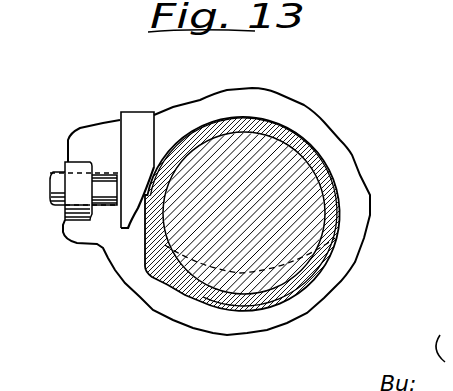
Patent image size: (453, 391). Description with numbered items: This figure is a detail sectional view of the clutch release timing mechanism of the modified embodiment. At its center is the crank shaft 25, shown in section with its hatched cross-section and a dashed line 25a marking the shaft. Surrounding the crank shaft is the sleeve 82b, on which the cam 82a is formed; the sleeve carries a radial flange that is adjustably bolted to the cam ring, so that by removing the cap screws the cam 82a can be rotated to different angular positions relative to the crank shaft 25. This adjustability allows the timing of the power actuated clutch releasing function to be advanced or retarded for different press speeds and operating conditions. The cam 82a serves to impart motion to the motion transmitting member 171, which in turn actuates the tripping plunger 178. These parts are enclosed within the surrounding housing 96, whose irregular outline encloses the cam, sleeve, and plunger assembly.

The housing 96 is at (254, 89).
The motion transmitting member 171 is at (137, 118).
The tripping plunger 178 is at (57, 173).
The cam 82a is at (153, 274).
The sleeve 82b is at (327, 266).
The crank shaft 25 is at (258, 285).
The shaft eccentric portion 25a is at (318, 230).